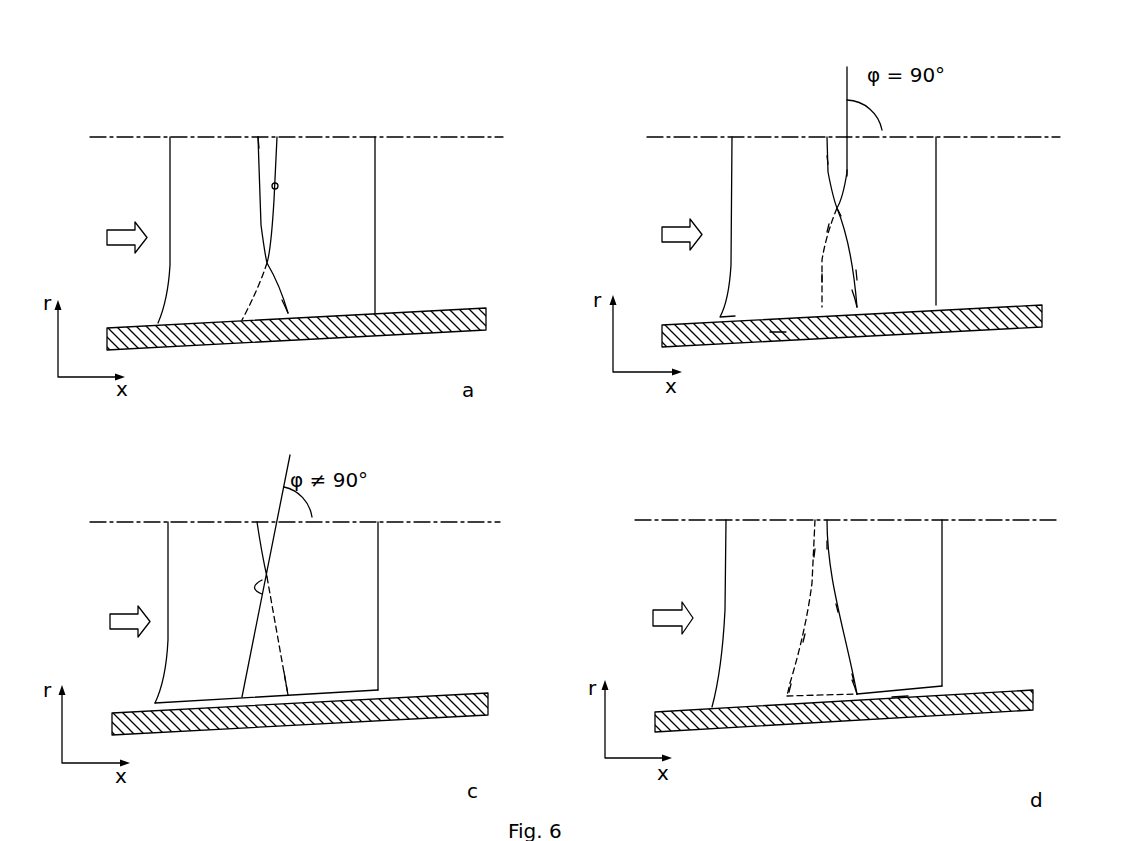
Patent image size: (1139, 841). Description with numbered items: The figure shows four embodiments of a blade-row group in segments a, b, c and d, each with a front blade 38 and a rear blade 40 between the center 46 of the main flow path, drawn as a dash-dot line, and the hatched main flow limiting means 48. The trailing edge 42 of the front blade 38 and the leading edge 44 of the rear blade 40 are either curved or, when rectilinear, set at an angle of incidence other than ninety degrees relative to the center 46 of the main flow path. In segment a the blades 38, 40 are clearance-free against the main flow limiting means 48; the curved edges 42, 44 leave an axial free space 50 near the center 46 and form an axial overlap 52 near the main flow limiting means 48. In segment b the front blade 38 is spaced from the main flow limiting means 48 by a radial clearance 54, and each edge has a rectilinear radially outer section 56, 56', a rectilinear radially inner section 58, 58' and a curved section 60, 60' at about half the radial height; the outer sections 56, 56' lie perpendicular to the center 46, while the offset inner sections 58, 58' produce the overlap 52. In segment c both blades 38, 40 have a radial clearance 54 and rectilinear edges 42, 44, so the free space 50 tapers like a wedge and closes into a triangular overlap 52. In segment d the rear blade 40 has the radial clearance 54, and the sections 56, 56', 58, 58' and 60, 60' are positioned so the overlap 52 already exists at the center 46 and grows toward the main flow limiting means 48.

The front blade 38 is at (763, 530).
The rear blade 40 is at (923, 525).
The trailing edge 42 is at (832, 530).
The leading edge 44 is at (811, 525).
The center of the main flow path 46 is at (1023, 518).
The main flow limiting means 48 is at (1023, 698).
The axial free space 50 is at (265, 545).
The axial overlap 52 is at (832, 650).
The radial clearance 54 is at (900, 695).
The radially outer section 56 is at (983, 362).
The radially outer section 56' is at (720, 338).
The radially inner section 58 is at (995, 463).
The radially inner section 58' is at (707, 470).
The curved section 60 is at (987, 411).
The curved section 60' is at (711, 395).